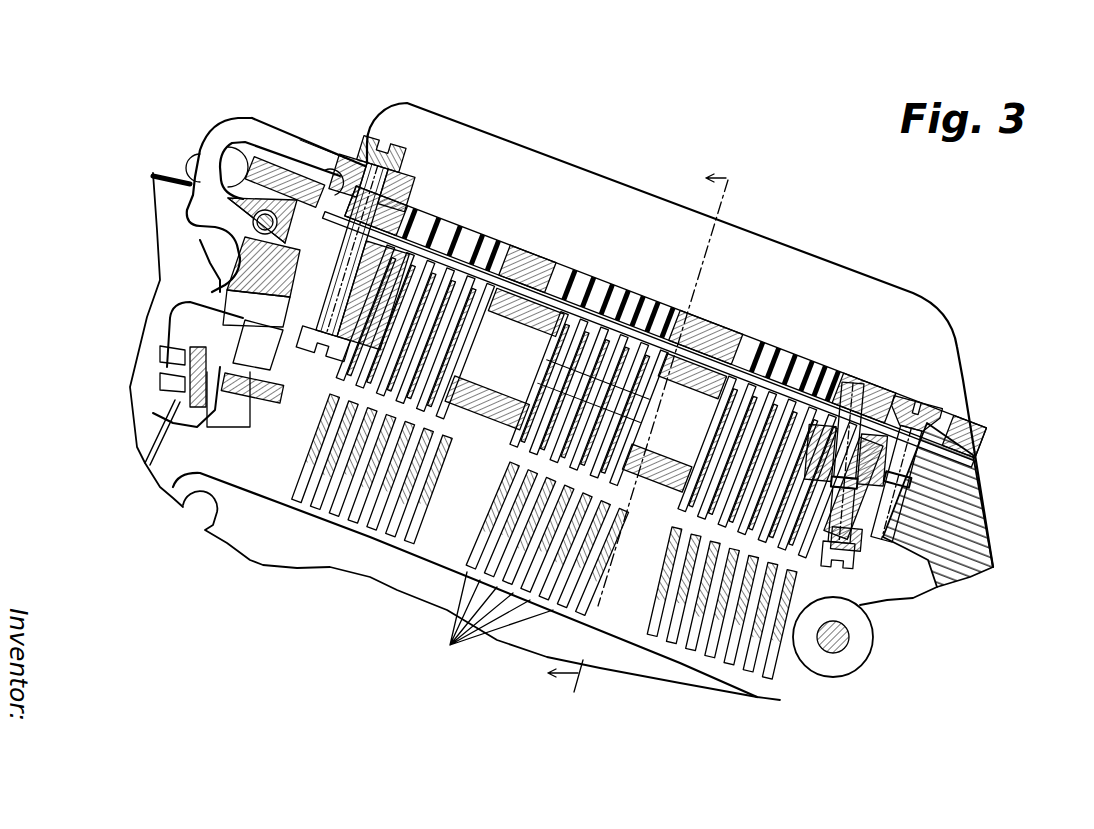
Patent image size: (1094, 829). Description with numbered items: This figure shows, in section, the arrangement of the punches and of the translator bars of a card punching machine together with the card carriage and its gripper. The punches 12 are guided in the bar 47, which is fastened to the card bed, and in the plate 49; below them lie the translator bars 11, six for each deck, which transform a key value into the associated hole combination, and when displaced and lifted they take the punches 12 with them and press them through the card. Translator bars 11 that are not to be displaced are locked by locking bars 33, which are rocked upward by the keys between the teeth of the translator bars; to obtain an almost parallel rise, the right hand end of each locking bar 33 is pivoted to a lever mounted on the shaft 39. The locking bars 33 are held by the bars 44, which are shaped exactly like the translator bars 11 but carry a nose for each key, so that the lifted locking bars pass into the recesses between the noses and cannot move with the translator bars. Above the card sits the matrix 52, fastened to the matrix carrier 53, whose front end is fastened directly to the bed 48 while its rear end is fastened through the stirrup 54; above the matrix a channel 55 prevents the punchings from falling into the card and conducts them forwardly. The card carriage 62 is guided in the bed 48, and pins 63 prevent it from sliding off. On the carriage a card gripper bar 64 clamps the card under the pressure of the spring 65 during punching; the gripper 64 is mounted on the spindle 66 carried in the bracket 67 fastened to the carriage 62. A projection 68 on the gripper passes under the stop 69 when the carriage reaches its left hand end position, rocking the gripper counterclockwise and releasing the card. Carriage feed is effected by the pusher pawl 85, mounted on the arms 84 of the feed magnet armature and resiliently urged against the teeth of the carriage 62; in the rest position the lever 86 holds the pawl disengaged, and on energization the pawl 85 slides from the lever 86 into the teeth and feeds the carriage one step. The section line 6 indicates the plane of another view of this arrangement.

The section line 6 is at (647, 424).
The translator bars 11 is at (492, 620).
The punches 12 is at (596, 401).
The locking bar 33 is at (537, 627).
The shaft 39 is at (847, 645).
The bars 44 is at (407, 562).
The bar 47 is at (665, 419).
The bed 48 is at (995, 498).
The plate 49 is at (703, 370).
The matrix 52 is at (648, 340).
The matrix carrier 53 is at (666, 322).
The stirrup 54 is at (305, 147).
The channel 55 is at (858, 300).
The card carriage 62 is at (227, 266).
The pins 63 is at (386, 175).
The card gripper bar 64 is at (275, 160).
The spring 65 is at (228, 198).
The spindle 66 is at (252, 221).
The bracket 67 is at (312, 193).
The projection 68 is at (258, 160).
The stop 69 is at (235, 163).
The arms 84 is at (143, 465).
The pusher pawl 85 is at (247, 340).
The lever 86 is at (150, 364).